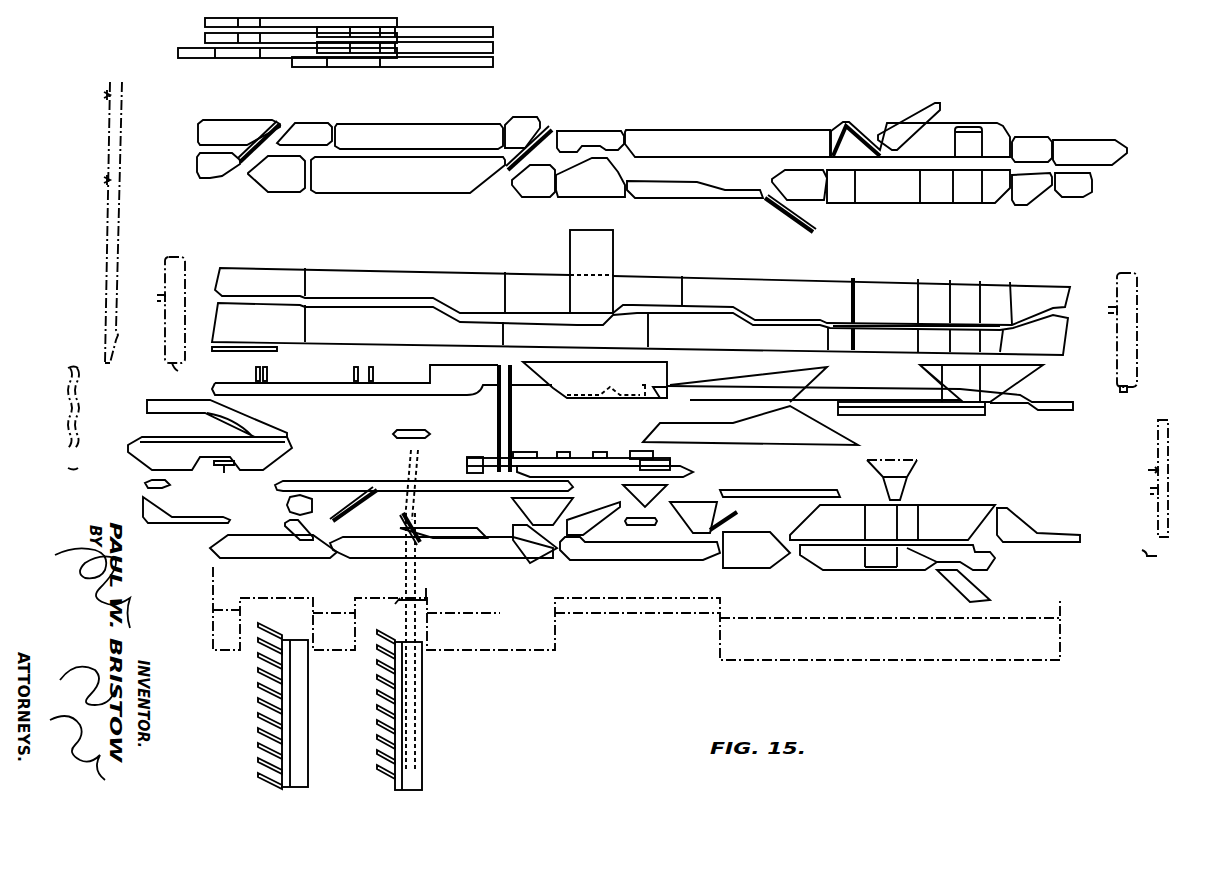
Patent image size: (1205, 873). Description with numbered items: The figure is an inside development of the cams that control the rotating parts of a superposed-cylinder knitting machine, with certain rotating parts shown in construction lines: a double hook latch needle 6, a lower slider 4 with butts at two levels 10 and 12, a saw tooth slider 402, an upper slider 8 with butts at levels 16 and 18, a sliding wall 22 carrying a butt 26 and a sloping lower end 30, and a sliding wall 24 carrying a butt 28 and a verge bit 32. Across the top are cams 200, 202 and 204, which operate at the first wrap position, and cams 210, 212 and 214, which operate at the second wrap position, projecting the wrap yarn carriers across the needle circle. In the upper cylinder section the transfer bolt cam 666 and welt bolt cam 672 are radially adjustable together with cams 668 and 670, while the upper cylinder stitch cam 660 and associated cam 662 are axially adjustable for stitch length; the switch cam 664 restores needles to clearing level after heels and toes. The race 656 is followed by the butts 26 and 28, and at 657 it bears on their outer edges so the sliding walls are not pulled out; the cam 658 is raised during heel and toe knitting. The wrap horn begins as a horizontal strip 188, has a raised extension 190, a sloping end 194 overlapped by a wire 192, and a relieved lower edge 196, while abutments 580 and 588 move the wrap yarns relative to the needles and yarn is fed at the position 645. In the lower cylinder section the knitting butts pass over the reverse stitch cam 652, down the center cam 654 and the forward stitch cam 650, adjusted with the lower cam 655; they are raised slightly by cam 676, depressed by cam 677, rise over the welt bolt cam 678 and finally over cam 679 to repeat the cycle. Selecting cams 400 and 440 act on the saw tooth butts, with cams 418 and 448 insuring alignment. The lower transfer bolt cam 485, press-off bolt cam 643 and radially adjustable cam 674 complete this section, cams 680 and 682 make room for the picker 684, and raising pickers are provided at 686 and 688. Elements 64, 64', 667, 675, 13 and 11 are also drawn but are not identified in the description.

The second wrap position cam 214 is at (206, 23).
The second wrap position cam 212 is at (204, 38).
The second wrap position cam 210 is at (241, 56).
The first wrap position cam 204 is at (494, 32).
The first wrap position cam 202 is at (494, 49).
The first wrap position cam 200 is at (338, 66).
The radially adjustable cam 670 is at (280, 124).
The welt bolt cam 672 is at (547, 127).
The associated cam 662 is at (608, 130).
The upper cylinder stitch cam 660 is at (592, 195).
The transfer bolt cam 666 is at (894, 129).
The radially adjustable cam 668 is at (812, 205).
The cam 658 is at (613, 260).
The race 656 is at (723, 303).
The race portion 657 is at (880, 325).
The abutment 580 is at (362, 360).
The abutment 588 is at (236, 365).
The pin 64 is at (291, 367).
The pin 64' is at (335, 367).
The horizontal strip 188 is at (1063, 398).
The relieved lower edge 196 is at (525, 385).
The wire 192 is at (646, 386).
The yarn feed finger position 645 is at (640, 400).
The sloping end 194 is at (660, 398).
The raised extension 190 is at (728, 394).
The plate 667 is at (900, 415).
The press-off bolt cam 643 is at (390, 478).
The raising picker 688 is at (700, 486).
The double hook latch needle 6 is at (77, 403).
The cam 680 is at (146, 484).
The picker 684 is at (224, 473).
The cam 679 is at (1036, 532).
The cam 682 is at (286, 505).
The cam 677 is at (318, 503).
The welt bolt cam 678 is at (287, 523).
The plate 675 is at (482, 555).
The butt level 10 is at (1150, 491).
The cam 676 is at (424, 529).
The radially adjustable cam 674 is at (532, 562).
The raising picker 686 is at (582, 499).
The center cam 654 is at (696, 501).
The reverse stitch cam 652 is at (730, 517).
The lower cylinder forward stitch cam 650 is at (606, 554).
The lower cam 655 is at (662, 556).
The lower transfer bolt cam 485 is at (984, 588).
The switch cam 664 is at (910, 479).
The saw tooth slider 402 is at (420, 598).
The butt level 12 is at (1142, 548).
The pin 13 is at (378, 700).
The alignment cam 448 is at (296, 748).
The selecting cam 440 is at (270, 644).
The alignment cam 418 is at (415, 734).
The selecting cam 400 is at (380, 665).
The upper slider 8 is at (106, 268).
The butt level 18 is at (104, 94).
The butt level 16 is at (104, 181).
The sliding wall 22 is at (166, 343).
The butt 26 is at (157, 294).
The sloping lower end 30 is at (172, 366).
The sliding wall 24 is at (1134, 362).
The butt 28 is at (1111, 312).
The verge bit 32 is at (1128, 390).
The lower slider 4 is at (1171, 504).
The tab 11 is at (1145, 465).